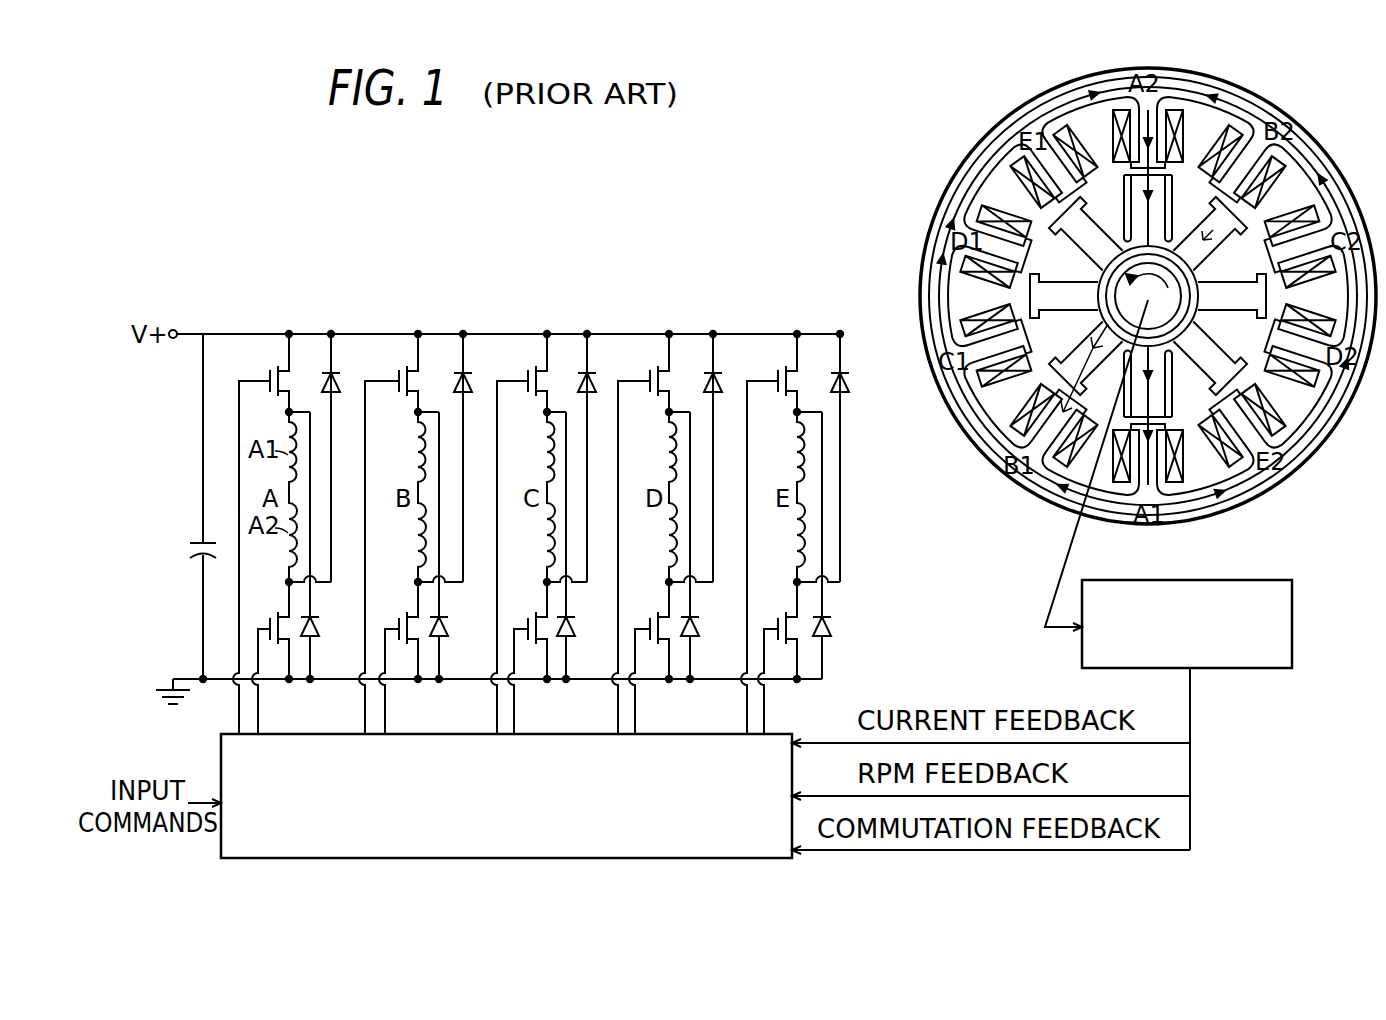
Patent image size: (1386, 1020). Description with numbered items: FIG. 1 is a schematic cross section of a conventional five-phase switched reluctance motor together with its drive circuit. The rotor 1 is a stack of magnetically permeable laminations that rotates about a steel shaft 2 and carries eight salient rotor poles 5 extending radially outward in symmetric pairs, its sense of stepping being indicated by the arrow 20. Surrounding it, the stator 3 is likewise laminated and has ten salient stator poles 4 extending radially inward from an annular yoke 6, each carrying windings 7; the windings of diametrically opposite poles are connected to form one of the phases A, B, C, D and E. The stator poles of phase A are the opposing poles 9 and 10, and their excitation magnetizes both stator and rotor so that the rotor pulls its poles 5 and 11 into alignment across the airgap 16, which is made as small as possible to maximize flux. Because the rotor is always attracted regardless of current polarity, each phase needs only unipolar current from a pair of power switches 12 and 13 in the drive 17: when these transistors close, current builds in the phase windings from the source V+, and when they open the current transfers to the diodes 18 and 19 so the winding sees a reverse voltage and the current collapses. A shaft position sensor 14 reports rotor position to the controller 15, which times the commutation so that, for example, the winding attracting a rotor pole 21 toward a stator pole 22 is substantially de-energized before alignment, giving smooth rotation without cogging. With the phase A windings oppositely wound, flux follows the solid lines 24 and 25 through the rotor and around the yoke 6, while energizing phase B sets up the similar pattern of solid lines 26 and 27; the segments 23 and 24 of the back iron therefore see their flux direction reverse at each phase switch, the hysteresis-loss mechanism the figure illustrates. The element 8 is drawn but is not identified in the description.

The rotor 1 is at (1088, 355).
The steel shaft 2 is at (1232, 284).
The stator 3 is at (1148, 296).
The stator poles 4 is at (1052, 420).
The rotor poles 5 is at (1158, 385).
The annular yoke 6 is at (993, 346).
The windings 7 is at (1148, 300).
The phase A winding coil 8 is at (1153, 299).
The stator pole of phase A 9 is at (1181, 208).
The stator pole of phase A 10 is at (1163, 412).
The rotor pole 11 is at (1118, 208).
The power switch 12 is at (283, 368).
The power switch 13 is at (283, 613).
The shaft position sensor 14 is at (1292, 612).
The controller 15 is at (478, 860).
The airgap 16 is at (1134, 185).
The drive 17 is at (563, 333).
The diode 18 is at (340, 382).
The diode 19 is at (318, 627).
The arrow 20 is at (1173, 296).
The rotor pole 21 is at (1172, 207).
The stator pole 22 is at (1252, 166).
The back iron segment 23 is at (1244, 131).
The back iron segment 24 is at (1147, 316).
The flux path line 25 is at (1148, 285).
The flux path line 26 is at (1311, 211).
The flux path line 27 is at (978, 216).